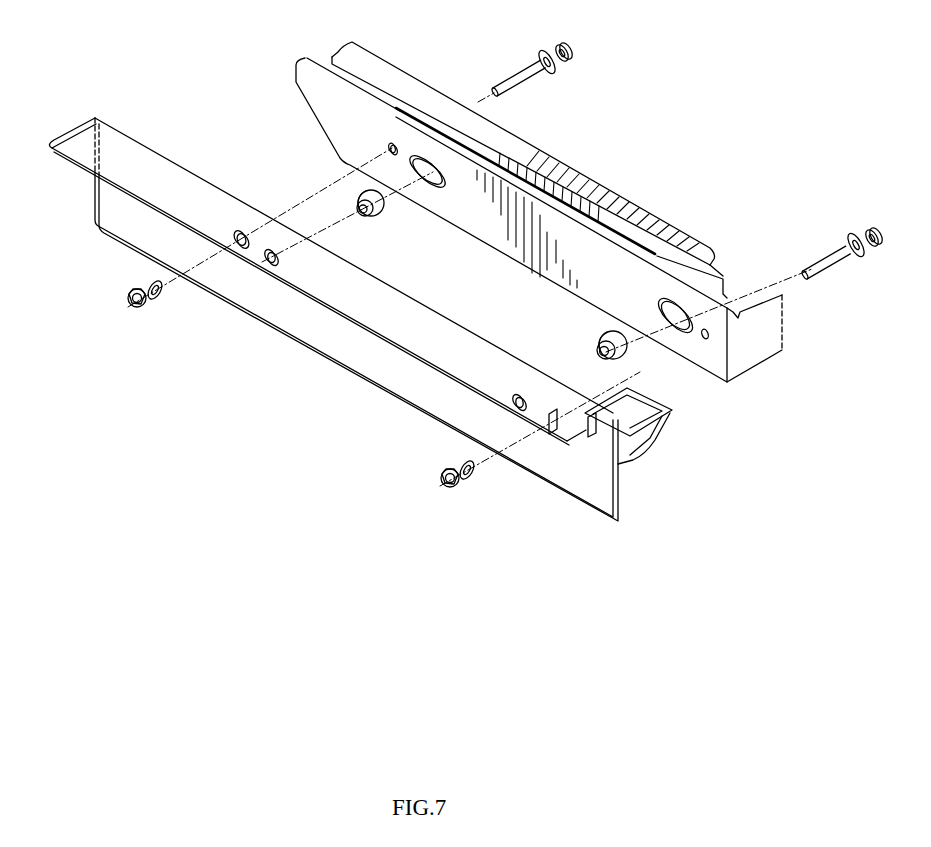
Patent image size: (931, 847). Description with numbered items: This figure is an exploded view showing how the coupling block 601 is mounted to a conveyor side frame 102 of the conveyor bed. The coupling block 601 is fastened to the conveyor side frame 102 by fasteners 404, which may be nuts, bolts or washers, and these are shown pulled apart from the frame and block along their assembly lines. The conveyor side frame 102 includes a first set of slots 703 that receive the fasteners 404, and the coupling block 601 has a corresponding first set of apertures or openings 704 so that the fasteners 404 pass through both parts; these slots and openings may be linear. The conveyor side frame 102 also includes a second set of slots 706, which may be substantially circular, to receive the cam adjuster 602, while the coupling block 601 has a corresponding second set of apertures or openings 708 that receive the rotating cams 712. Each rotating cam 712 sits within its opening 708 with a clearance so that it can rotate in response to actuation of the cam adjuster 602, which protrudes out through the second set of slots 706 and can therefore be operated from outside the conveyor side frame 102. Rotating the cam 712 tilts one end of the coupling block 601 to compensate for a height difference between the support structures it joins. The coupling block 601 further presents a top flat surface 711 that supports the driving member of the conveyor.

The conveyor side frame 102 is at (120, 205).
The fasteners 404 is at (572, 52).
The coupling block 601 is at (451, 202).
The cam adjuster 602 is at (363, 212).
The first set of slots 703 is at (238, 245).
The first set of apertures or openings 704 is at (392, 148).
The second set of slots 706 is at (270, 260).
The second set of apertures or openings 708 is at (433, 168).
The top flat surface 711 is at (603, 194).
The rotating cam 712 is at (628, 343).